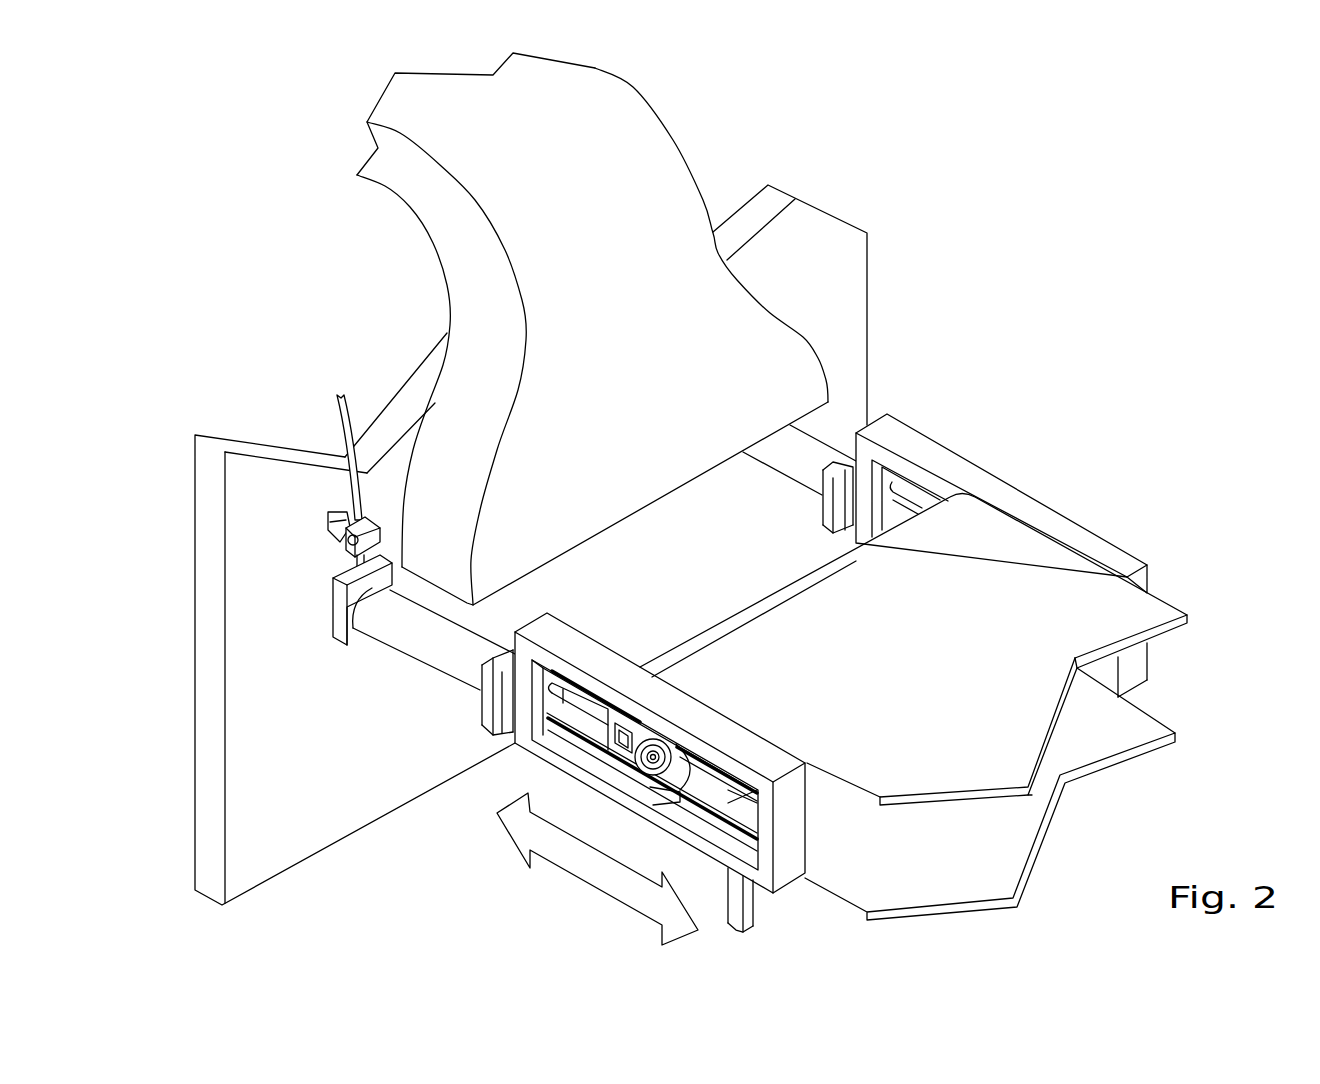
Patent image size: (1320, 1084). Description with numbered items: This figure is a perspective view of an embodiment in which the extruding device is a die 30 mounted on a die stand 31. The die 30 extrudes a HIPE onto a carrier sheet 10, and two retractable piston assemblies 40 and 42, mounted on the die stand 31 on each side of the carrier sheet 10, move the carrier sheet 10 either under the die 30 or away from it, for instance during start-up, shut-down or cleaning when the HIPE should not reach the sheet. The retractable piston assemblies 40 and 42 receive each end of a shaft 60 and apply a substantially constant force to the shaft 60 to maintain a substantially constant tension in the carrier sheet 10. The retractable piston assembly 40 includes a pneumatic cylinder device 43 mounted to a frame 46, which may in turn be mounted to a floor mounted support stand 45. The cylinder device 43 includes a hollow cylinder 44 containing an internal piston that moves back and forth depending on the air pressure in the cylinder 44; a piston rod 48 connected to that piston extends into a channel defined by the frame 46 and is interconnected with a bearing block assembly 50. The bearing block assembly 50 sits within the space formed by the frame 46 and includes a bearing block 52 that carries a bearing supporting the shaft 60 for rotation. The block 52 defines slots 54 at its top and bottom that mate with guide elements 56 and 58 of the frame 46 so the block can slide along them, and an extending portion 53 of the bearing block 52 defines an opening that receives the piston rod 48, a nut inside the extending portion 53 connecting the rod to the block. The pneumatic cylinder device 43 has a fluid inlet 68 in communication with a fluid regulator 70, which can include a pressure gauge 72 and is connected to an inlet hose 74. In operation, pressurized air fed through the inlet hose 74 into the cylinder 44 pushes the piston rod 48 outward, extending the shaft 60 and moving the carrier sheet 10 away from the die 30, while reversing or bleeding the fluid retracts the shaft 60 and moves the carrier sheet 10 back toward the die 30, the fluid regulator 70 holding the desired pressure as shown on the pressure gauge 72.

The carrier sheet 10 is at (1078, 567).
The die 30 is at (657, 160).
The die stand 31 is at (233, 577).
The retractable piston assembly 40 is at (513, 763).
The retractable piston assembly 42 is at (952, 436).
The pneumatic cylinder device 43 is at (400, 635).
The hollow cylinder 44 is at (453, 662).
The floor mounted support stand 45 is at (748, 887).
The frame 46 is at (795, 843).
The piston rod 48 is at (580, 707).
The bearing block assembly 50 is at (713, 781).
The bearing block 52 is at (662, 782).
The extending portion 53 is at (610, 728).
The slots 54 is at (670, 800).
The guide element 56 is at (558, 673).
The guide element 58 is at (578, 742).
The shaft 60 is at (640, 767).
The fluid inlet 68 is at (345, 573).
The fluid regulator 70 is at (327, 525).
The pressure gauge 72 is at (383, 533).
The inlet hose 74 is at (333, 413).